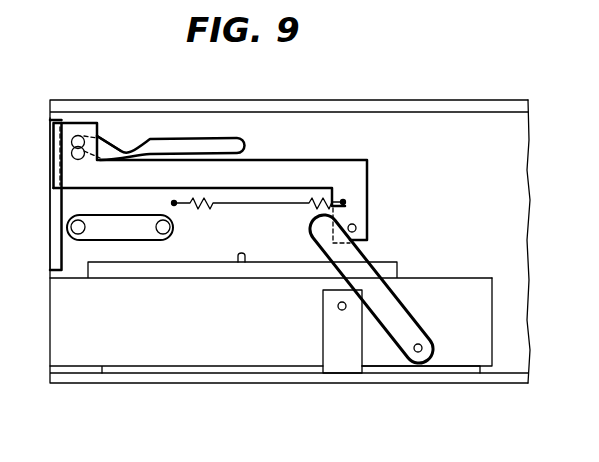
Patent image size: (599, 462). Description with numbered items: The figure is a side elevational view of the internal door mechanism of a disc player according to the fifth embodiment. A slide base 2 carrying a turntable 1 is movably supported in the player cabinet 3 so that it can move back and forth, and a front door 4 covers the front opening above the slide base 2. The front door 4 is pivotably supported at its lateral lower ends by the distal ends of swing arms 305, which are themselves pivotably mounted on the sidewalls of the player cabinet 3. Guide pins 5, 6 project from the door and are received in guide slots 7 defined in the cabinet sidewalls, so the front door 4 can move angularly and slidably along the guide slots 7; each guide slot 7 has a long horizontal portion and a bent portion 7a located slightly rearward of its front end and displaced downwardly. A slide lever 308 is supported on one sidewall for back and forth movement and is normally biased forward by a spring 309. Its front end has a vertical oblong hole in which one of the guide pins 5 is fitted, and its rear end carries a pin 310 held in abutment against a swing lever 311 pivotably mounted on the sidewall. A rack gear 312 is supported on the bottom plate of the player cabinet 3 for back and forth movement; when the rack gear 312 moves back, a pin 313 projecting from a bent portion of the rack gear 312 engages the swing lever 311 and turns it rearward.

The turntable 1 is at (103, 270).
The slide base 2 is at (67, 332).
The player cabinet 3 is at (383, 103).
The front door 4 is at (52, 205).
The guide pin 5 is at (75, 147).
The lower guide pin 6 is at (70, 226).
The guide slot 7 is at (168, 146).
The bent portion 7a is at (122, 146).
The swing arm 305 is at (78, 237).
The slide lever 308 is at (284, 168).
The spring 309 is at (260, 205).
The pin 310 is at (358, 229).
The swing lever 311 is at (392, 308).
The rack gear 312 is at (388, 370).
The pin 313 is at (342, 311).